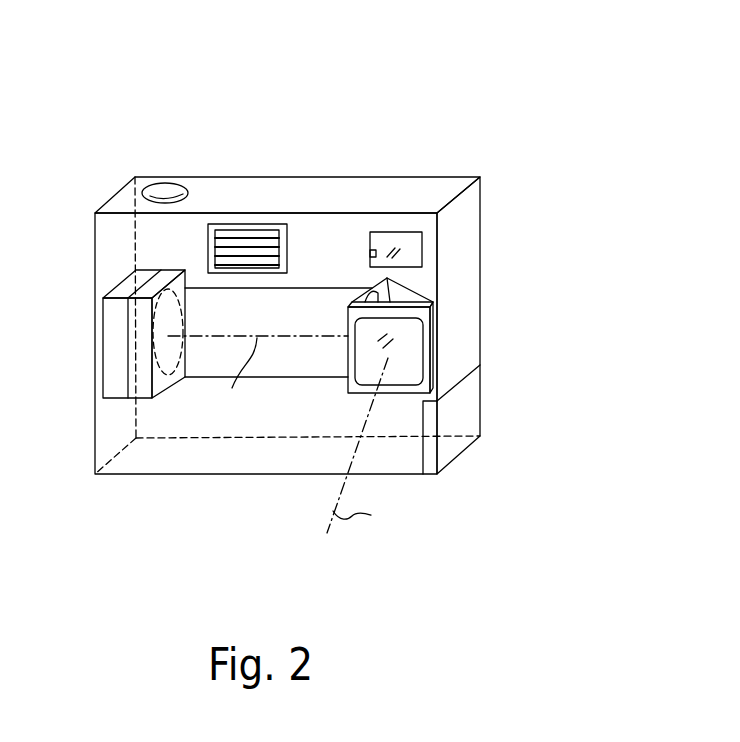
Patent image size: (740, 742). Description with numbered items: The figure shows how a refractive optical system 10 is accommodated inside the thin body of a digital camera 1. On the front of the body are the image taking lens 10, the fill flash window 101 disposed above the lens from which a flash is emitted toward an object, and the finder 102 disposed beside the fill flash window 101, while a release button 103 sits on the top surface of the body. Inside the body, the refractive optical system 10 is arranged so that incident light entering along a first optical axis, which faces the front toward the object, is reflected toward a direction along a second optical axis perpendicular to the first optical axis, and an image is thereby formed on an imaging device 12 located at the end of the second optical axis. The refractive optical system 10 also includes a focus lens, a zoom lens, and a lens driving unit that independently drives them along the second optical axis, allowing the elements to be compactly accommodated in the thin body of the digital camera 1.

The digital camera 1 is at (330, 140).
The refractive optical system 10 is at (412, 350).
The imaging device 12 is at (137, 400).
The fill flash window 101 is at (370, 259).
The finder 102 is at (287, 249).
The release button 103 is at (167, 192).